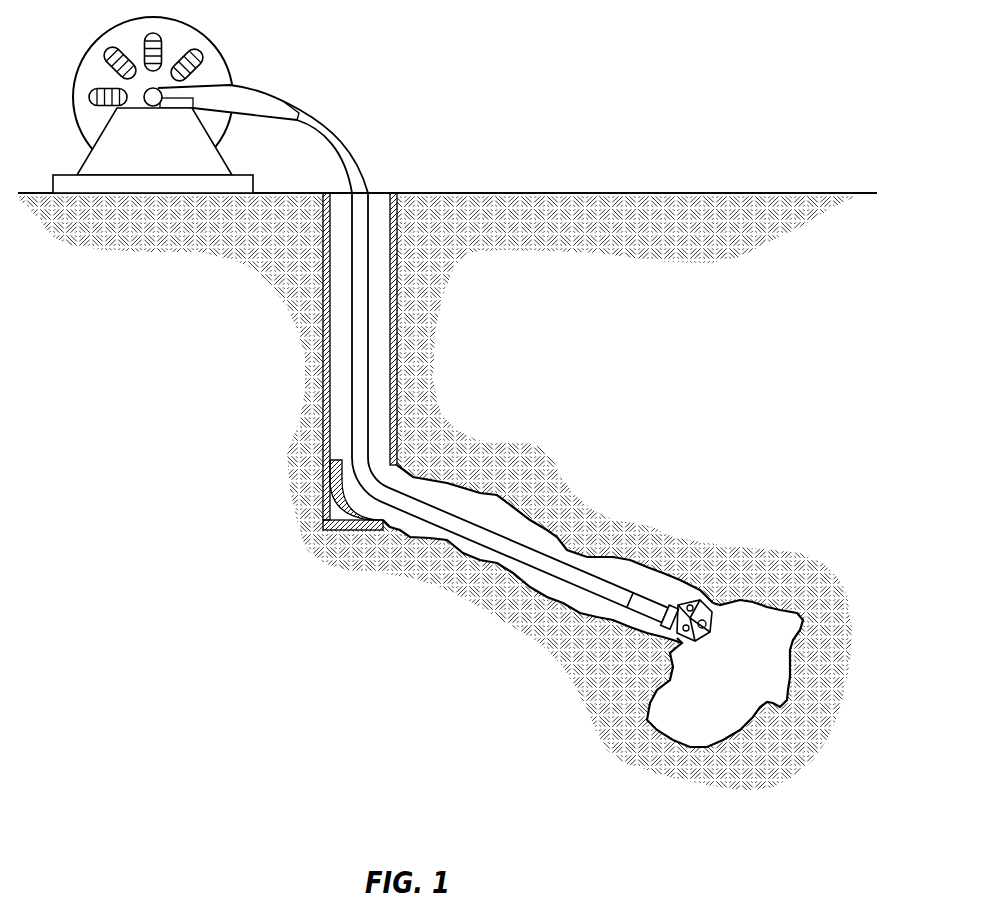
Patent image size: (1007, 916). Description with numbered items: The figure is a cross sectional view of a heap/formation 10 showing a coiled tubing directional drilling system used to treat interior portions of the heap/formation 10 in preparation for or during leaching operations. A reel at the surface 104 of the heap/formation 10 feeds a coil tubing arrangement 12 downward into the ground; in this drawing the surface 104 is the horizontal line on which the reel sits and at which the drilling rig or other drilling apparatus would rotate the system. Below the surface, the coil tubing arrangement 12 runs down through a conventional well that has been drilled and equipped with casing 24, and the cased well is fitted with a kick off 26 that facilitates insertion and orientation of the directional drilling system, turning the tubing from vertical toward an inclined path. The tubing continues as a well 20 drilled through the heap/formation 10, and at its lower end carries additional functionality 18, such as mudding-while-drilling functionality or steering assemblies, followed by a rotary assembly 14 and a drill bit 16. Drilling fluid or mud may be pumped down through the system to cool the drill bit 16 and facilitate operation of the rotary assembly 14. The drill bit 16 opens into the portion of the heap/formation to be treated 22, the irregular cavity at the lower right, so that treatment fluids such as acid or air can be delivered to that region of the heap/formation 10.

The heap/formation 10 is at (710, 263).
The earth surface 104 is at (690, 192).
The coil tubing arrangement 12 is at (330, 122).
The rotary assembly 14 is at (673, 603).
The drill bit 16 is at (712, 628).
The additional functionality 18 is at (645, 604).
The well 20 is at (340, 378).
The portion of the heap/formation to be treated 22 is at (690, 723).
The casing 24 is at (393, 190).
The kick off 26 is at (348, 530).